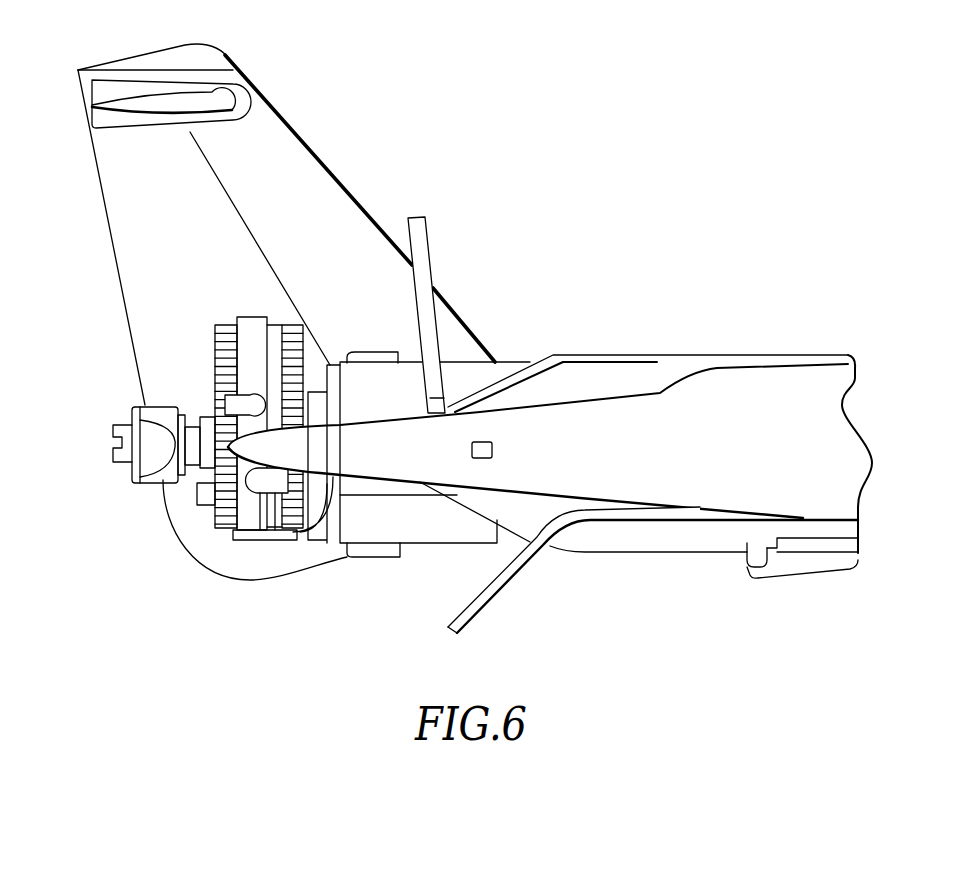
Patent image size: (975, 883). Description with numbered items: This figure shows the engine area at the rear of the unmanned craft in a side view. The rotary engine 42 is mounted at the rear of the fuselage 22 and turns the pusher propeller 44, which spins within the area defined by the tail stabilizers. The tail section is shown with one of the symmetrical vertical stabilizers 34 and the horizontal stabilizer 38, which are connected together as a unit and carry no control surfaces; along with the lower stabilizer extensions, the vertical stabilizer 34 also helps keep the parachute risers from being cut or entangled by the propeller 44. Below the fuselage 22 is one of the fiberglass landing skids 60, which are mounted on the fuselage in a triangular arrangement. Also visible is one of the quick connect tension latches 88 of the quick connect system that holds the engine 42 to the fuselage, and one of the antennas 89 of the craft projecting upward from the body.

The fuselage 22 is at (482, 368).
The vertical stabilizer 34 is at (315, 150).
The horizontal stabilizer 38 is at (210, 105).
The rotary engine 42 is at (215, 343).
The pusher propeller 44 is at (137, 483).
The landing skid 60 is at (508, 583).
The quick connect tension latch 88 is at (385, 348).
The antenna 89 is at (427, 228).